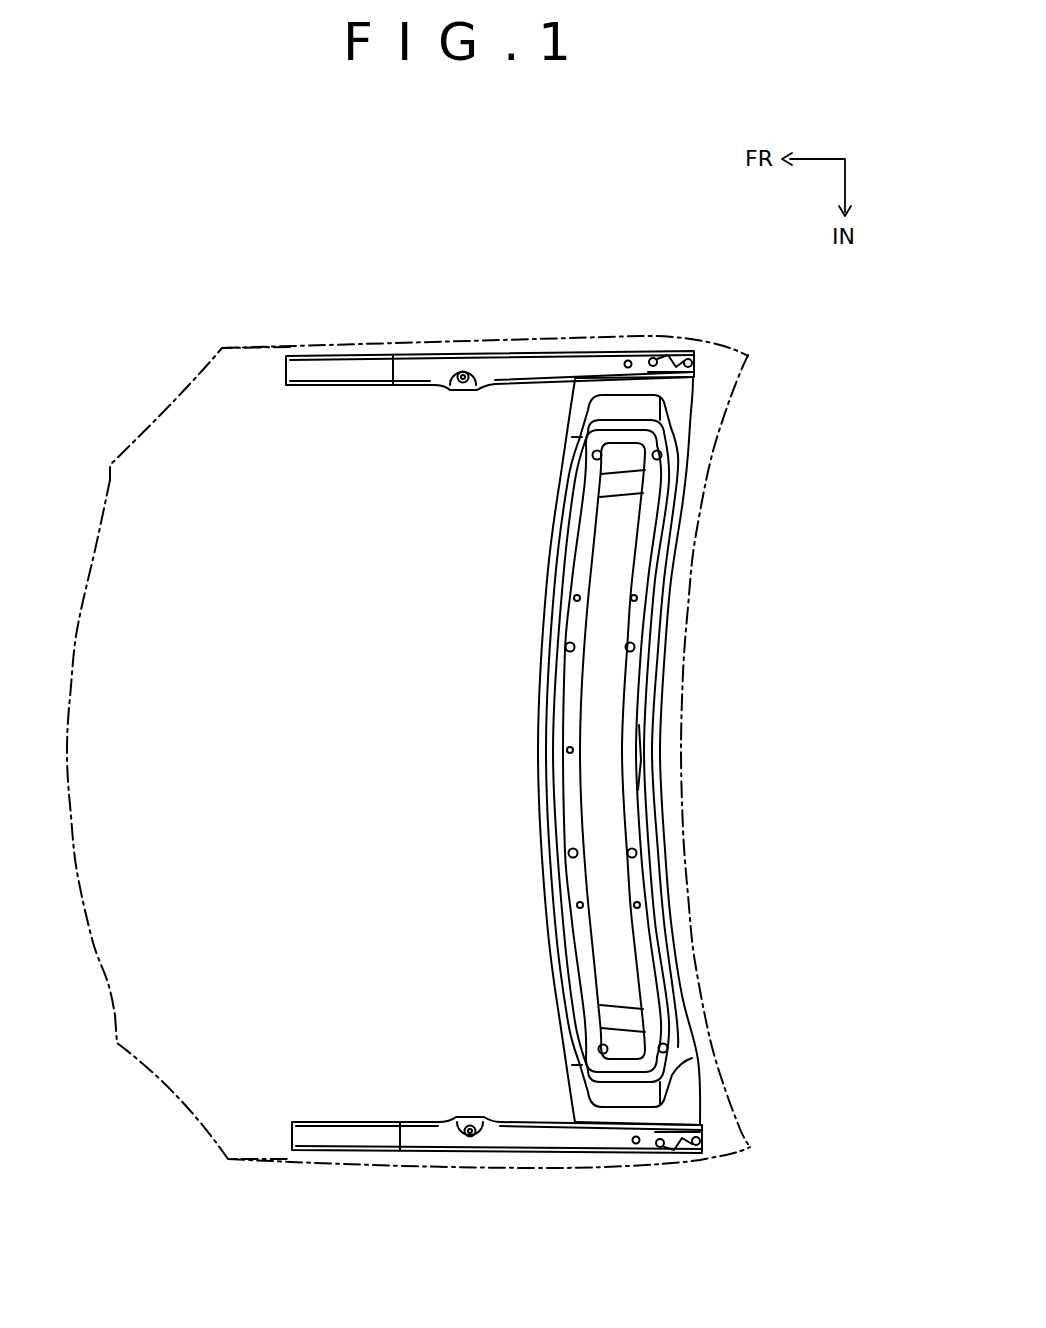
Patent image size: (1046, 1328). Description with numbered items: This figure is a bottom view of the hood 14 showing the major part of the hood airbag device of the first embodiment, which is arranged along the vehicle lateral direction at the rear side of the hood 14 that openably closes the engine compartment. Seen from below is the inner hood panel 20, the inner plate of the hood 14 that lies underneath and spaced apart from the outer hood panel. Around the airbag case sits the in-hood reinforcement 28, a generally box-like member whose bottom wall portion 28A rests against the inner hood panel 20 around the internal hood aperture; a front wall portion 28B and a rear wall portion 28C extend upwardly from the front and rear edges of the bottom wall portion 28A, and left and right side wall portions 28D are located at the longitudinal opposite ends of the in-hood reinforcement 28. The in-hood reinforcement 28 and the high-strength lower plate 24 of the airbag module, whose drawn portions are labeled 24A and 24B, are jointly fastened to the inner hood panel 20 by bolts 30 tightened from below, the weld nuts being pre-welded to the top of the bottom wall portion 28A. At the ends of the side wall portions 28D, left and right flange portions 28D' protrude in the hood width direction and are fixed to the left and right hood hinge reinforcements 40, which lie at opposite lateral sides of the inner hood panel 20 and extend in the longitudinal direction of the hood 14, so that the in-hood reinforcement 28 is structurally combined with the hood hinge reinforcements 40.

The hood 14 is at (453, 318).
The inner hood panel 20 is at (288, 346).
The lower plate 24 is at (652, 793).
The front flange of frame 24A is at (565, 698).
The rear flange of frame 24B is at (632, 697).
The in-hood reinforcement 28 is at (683, 927).
The bottom wall portion 28A is at (573, 927).
The front wall portion 28B is at (560, 894).
The rear wall portion 28C is at (655, 882).
The side wall portion 28D is at (636, 758).
The flange portion 28D' is at (703, 751).
The bolt 30 is at (594, 455).
The hood hinge reinforcement 40 is at (527, 362).